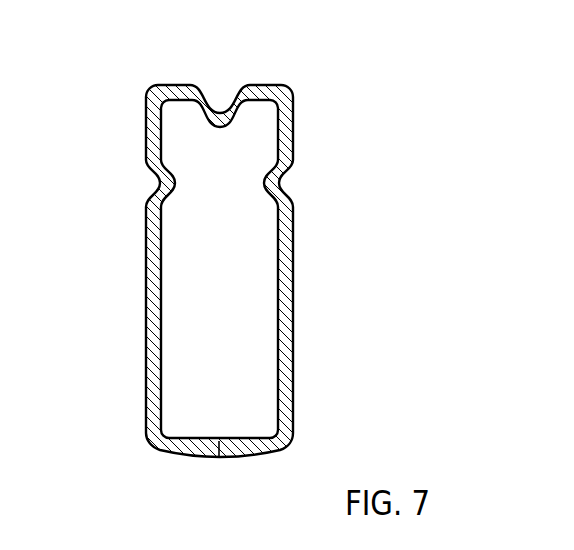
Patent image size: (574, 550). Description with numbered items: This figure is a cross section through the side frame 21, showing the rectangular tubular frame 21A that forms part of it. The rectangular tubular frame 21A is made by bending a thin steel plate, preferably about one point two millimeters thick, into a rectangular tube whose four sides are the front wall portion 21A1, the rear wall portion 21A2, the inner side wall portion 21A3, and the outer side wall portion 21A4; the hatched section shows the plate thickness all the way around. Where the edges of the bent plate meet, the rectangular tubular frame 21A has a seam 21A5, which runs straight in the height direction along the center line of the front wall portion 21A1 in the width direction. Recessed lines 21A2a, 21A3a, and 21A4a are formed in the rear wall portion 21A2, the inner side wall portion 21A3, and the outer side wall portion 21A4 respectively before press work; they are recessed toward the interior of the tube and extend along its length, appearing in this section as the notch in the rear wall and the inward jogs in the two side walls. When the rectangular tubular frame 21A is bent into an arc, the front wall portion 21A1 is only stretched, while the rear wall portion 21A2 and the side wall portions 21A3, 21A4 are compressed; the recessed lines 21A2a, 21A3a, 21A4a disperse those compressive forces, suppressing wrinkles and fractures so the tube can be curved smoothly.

The side frame 21 is at (220, 275).
The rectangular tubular frame 21A is at (220, 275).
The front wall portion 21A1 is at (200, 471).
The rear wall portion 21A2 is at (244, 74).
The recessed line 21A2a is at (220, 112).
The inner side wall portion 21A3 is at (101, 265).
The recessed line 21A3a is at (160, 182).
The outer side wall portion 21A4 is at (337, 265).
The recessed line 21A4a is at (287, 185).
The seam 21A5 is at (187, 450).